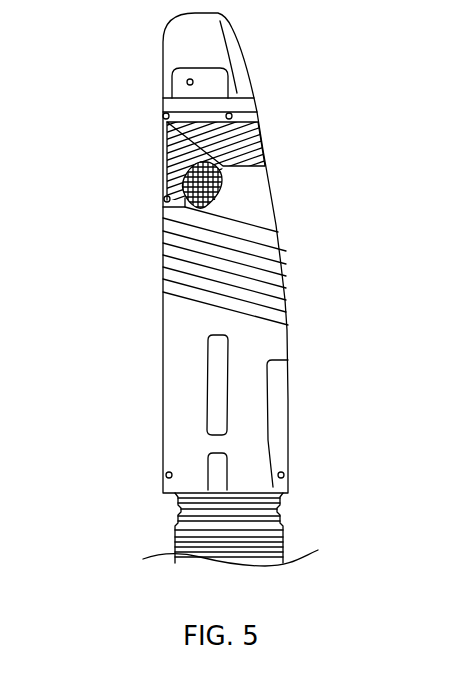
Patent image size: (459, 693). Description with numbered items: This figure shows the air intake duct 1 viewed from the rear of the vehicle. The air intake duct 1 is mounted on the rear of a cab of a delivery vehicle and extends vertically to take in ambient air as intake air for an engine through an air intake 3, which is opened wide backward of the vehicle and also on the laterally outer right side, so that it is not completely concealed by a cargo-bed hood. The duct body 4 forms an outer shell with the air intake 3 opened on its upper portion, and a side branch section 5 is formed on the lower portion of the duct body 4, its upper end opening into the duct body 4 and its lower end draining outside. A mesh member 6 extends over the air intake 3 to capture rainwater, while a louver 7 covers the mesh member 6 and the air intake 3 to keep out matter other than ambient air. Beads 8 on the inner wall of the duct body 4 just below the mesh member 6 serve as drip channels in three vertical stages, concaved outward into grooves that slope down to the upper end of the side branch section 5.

The air intake duct 1 is at (262, 100).
The air intake 3 is at (256, 193).
The duct body 4 is at (185, 348).
The side branch section 5 is at (277, 387).
The mesh member 6 is at (203, 205).
The louver 7 is at (159, 133).
The beads 8 is at (247, 262).